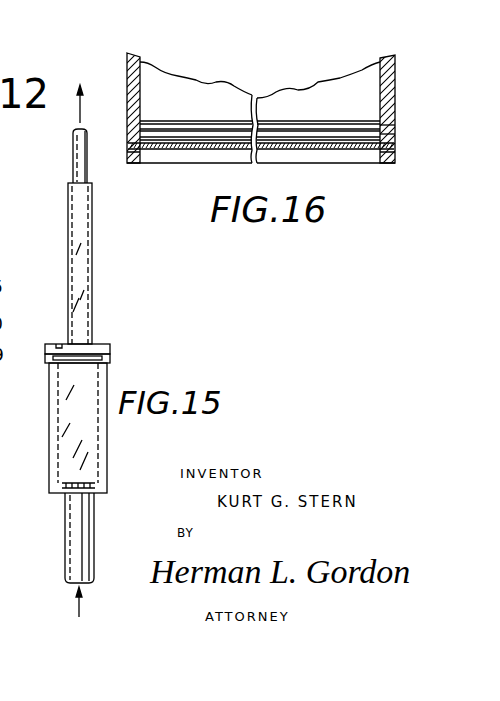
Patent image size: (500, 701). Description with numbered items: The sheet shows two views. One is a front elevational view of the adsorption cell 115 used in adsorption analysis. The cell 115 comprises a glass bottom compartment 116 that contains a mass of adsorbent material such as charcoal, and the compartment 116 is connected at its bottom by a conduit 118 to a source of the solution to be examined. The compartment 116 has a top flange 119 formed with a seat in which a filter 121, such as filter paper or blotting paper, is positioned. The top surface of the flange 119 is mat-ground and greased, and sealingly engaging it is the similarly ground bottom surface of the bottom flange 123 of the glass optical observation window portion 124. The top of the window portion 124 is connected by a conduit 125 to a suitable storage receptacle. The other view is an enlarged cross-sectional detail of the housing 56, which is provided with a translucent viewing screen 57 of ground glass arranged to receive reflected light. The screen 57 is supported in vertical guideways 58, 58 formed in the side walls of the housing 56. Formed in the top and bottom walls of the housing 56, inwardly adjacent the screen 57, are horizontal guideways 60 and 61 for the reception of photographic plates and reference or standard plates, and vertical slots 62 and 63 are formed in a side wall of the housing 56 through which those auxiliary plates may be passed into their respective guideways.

In FIG. 16, the housing 56 is at (126, 68).
In FIG. 16, the translucent viewing screen 57 is at (175, 150).
In FIG. 16, the vertical guideways 58 is at (127, 147).
In FIG. 16, the horizontal guideway 60 is at (196, 138).
In FIG. 16, the horizontal guideway 61 is at (200, 126).
In FIG. 16, the vertical slot 62 is at (380, 136).
In FIG. 16, the vertical slot 63 is at (386, 128).
In FIG. 15, the adsorption cell 115 is at (110, 356).
In FIG. 15, the glass bottom compartment 116 is at (52, 437).
In FIG. 15, the conduit 118 is at (72, 518).
In FIG. 15, the top flange 119 is at (110, 358).
In FIG. 15, the filter 121 is at (60, 378).
In FIG. 15, the bottom flange 123 is at (107, 345).
In FIG. 15, the glass optical observation window portion 124 is at (84, 265).
In FIG. 15, the conduit 125 is at (77, 148).